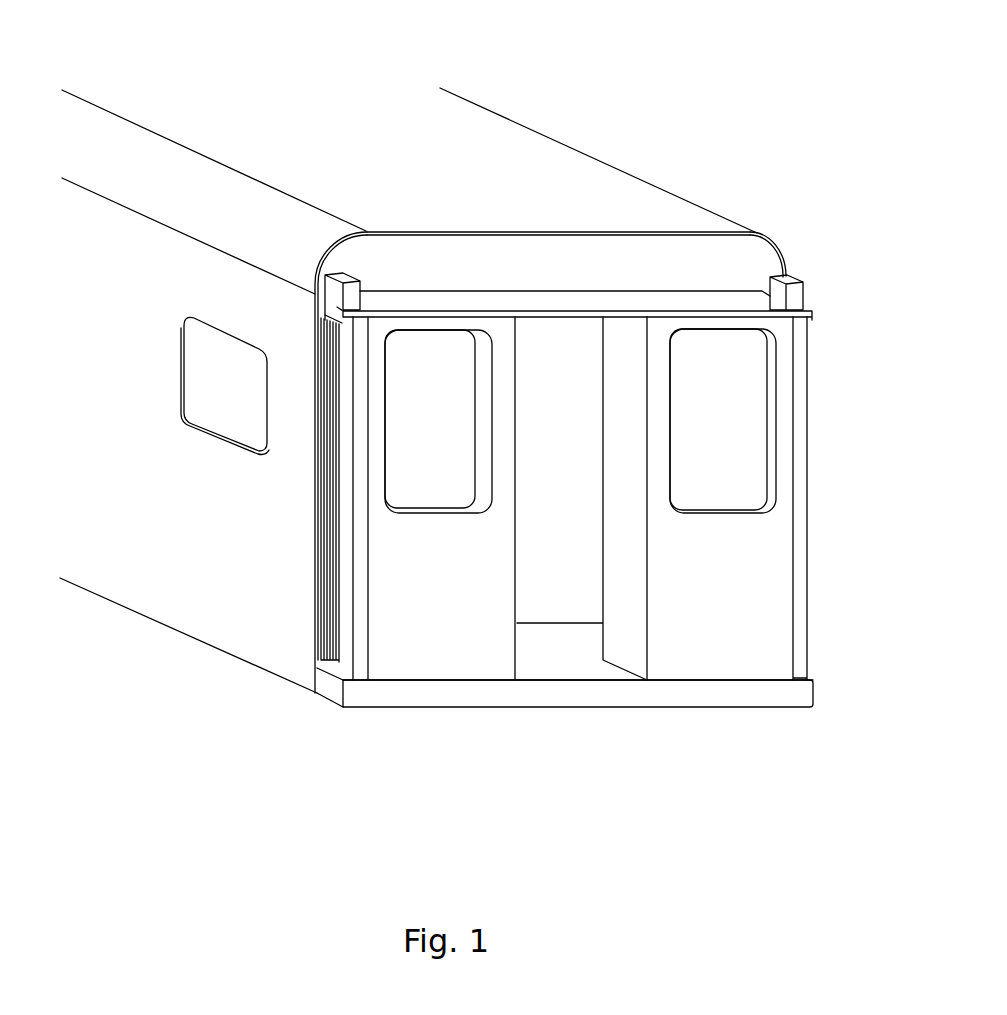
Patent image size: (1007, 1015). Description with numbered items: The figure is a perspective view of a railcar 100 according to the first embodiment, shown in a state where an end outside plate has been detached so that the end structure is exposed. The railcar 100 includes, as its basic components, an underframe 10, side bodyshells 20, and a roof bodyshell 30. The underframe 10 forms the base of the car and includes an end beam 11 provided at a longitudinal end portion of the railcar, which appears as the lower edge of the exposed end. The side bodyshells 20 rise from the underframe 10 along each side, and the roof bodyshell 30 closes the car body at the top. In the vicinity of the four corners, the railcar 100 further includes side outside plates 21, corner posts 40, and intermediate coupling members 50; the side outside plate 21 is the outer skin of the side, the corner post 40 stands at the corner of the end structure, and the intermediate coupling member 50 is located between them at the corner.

The railcar 100 is at (728, 91).
The underframe 10 is at (538, 718).
The end beam 11 is at (570, 690).
The side bodyshell 20 is at (184, 590).
The side outside plate 21 is at (265, 623).
The roof bodyshell 30 is at (490, 148).
The corner post 40 is at (348, 668).
The intermediate coupling member 50 is at (327, 635).